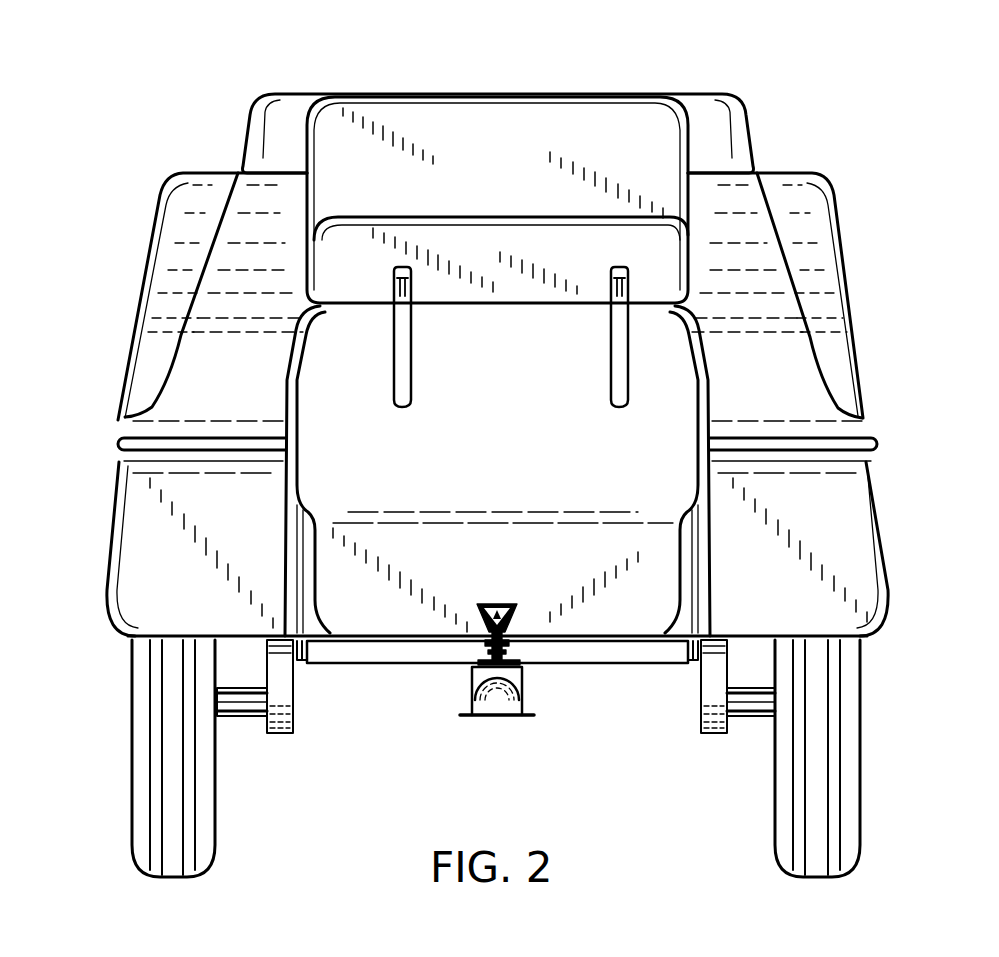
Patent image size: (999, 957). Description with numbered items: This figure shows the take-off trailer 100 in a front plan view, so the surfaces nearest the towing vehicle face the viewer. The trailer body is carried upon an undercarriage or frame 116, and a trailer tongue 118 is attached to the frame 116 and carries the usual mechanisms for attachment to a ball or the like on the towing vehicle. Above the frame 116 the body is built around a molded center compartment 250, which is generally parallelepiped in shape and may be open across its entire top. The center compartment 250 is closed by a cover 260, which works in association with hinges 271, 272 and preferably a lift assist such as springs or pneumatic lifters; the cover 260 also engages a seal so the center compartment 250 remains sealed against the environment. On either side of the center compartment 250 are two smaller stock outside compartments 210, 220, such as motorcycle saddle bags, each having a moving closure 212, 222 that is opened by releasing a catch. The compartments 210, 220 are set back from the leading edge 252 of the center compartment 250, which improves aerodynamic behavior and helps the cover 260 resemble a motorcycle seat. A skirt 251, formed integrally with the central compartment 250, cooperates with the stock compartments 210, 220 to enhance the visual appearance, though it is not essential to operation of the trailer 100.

The take-off trailer 100 is at (905, 85).
The cover 260 is at (597, 91).
The outside compartment 210 is at (270, 187).
The outside compartment 220 is at (735, 180).
The moving closure 212 is at (177, 212).
The moving closure 222 is at (817, 213).
The hinge 271 is at (397, 398).
The hinge 272 is at (610, 407).
The center compartment 250 is at (578, 623).
The skirt 251 is at (870, 590).
The leading edge 252 is at (393, 625).
The frame 116 is at (452, 658).
The trailer tongue 118 is at (467, 705).